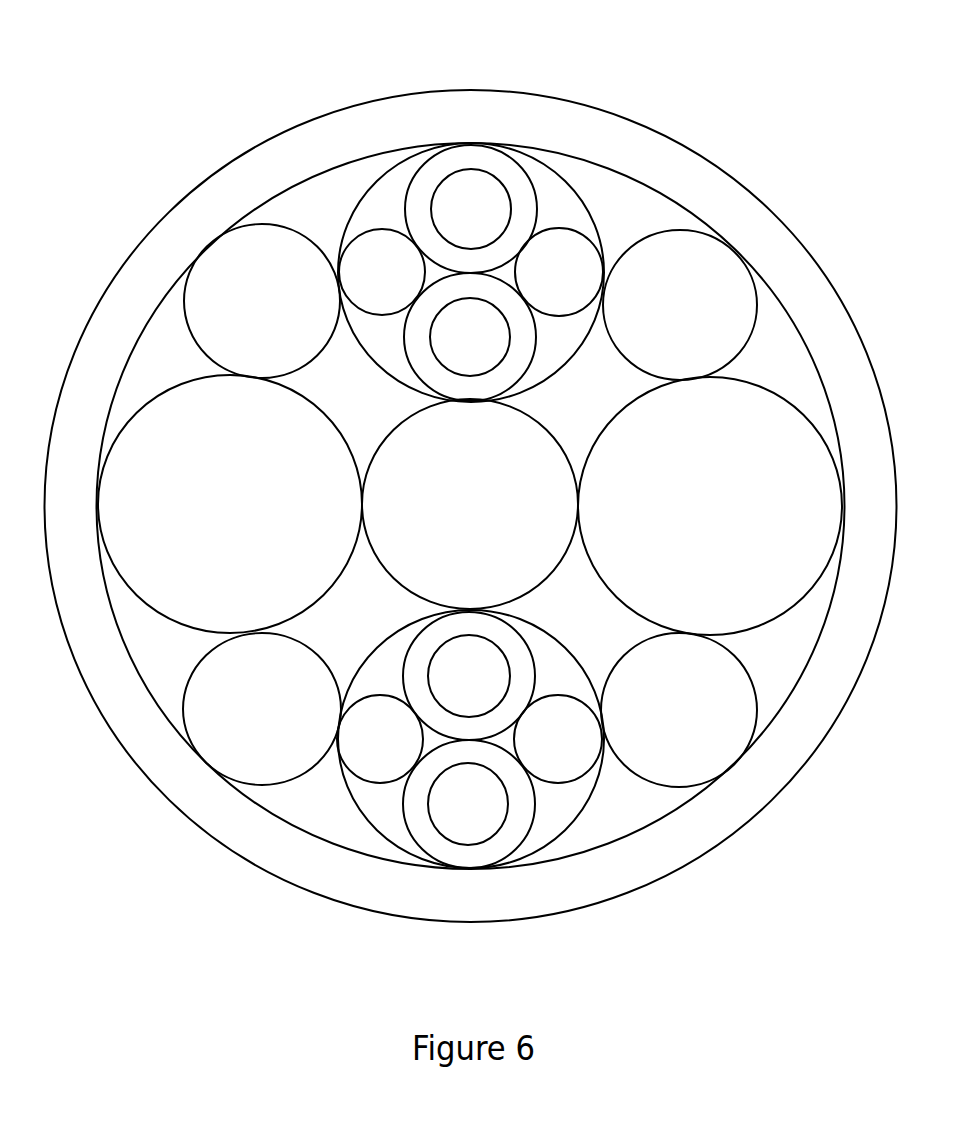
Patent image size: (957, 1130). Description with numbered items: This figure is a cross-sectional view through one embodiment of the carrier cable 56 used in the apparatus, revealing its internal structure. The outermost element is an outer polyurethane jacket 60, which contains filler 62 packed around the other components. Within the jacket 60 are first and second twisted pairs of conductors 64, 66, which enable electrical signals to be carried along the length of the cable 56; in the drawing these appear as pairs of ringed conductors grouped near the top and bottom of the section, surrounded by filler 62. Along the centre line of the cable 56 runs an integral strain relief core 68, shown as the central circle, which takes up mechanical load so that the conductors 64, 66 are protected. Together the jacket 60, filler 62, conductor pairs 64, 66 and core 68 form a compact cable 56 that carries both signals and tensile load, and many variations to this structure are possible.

The carrier cable 56 is at (211, 136).
The outer polyurethane jacket 60 is at (330, 133).
The filler 62 is at (383, 268).
The first twisted pair of conductors 64 is at (472, 207).
The second twisted pair of conductors 66 is at (461, 813).
The integral strain relief core 68 is at (403, 545).